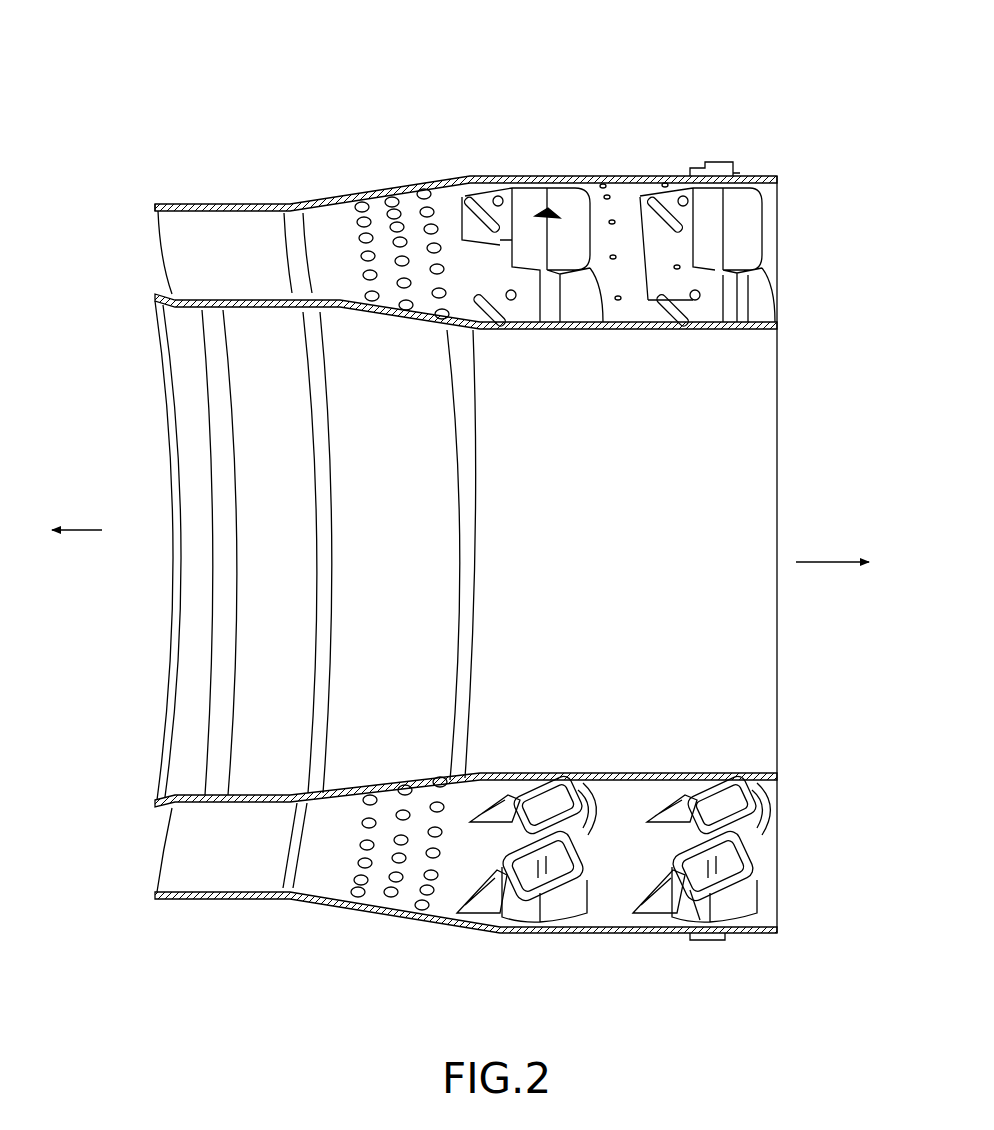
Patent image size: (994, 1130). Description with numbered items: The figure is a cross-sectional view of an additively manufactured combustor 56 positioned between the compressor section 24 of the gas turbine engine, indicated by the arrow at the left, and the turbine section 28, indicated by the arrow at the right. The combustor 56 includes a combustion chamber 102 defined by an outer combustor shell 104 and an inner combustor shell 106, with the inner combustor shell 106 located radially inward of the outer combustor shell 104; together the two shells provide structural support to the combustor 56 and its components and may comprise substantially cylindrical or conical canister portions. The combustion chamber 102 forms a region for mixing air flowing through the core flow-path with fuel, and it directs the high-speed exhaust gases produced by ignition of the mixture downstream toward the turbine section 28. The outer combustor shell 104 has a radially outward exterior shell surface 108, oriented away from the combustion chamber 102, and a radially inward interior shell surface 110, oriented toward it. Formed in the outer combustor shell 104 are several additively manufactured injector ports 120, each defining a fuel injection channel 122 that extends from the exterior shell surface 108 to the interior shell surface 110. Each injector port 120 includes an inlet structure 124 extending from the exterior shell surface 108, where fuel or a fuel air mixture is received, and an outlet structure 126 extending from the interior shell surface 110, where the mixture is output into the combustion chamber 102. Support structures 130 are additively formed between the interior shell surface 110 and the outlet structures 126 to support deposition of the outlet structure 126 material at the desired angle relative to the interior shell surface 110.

The combustor 56 is at (478, 509).
The combustion chamber 102 is at (325, 240).
The outer combustor shell 104 is at (328, 197).
The inner combustor shell 106 is at (263, 305).
The exterior shell surface 108 is at (175, 203).
The interior shell surface 110 is at (244, 251).
The injector port 120 is at (563, 207).
The fuel injection channel 122 is at (548, 795).
The inlet structure 124 is at (700, 163).
The outlet structure 126 is at (756, 241).
The support structure 130 is at (683, 240).
The compressor section 24 is at (90, 530).
The turbine section 28 is at (850, 562).